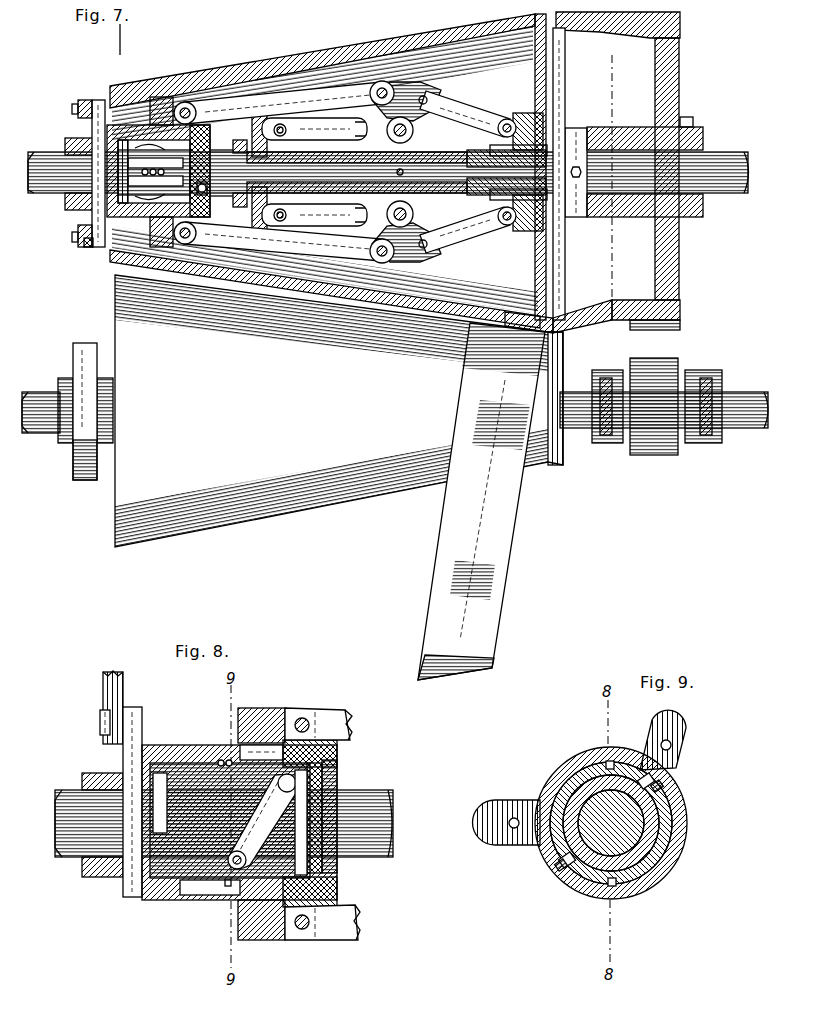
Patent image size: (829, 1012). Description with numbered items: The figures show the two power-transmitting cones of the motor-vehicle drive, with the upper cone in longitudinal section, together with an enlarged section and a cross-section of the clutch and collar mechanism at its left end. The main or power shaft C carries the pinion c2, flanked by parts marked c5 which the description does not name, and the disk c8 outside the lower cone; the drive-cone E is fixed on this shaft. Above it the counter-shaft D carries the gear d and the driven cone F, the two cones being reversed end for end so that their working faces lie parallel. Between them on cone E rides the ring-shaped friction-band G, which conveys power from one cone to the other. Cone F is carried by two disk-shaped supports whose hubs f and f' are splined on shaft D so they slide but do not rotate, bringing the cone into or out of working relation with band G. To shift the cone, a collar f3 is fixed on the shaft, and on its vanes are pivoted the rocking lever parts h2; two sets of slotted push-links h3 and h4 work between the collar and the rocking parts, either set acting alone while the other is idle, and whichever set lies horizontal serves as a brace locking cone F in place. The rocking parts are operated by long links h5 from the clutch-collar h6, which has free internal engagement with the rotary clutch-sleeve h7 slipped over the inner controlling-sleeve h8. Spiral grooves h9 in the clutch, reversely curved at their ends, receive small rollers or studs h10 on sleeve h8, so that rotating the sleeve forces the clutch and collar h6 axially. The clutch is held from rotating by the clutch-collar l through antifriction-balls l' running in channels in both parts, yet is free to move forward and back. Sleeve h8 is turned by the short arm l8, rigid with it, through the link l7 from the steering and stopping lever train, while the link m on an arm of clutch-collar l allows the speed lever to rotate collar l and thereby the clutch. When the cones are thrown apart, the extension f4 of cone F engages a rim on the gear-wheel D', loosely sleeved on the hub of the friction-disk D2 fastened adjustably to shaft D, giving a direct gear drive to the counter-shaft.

In FIG. 7, the driven cone F is at (328, 171).
In FIG. 7, the hub f is at (567, 164).
In FIG. 7, the hub f' is at (338, 162).
In FIG. 7, the collar f3 is at (498, 172).
In FIG. 7, the extension f4 is at (566, 329).
In FIG. 7, the drive-cone E is at (339, 411).
In FIG. 7, the friction-band G is at (445, 519).
In FIG. 7, the counter-shaft D is at (402, 172).
In FIG. 8, the counter-shaft D is at (233, 823).
In FIG. 9, the counter-shaft D is at (645, 828).
In FIG. 7, the gear-wheel D' is at (632, 172).
In FIG. 7, the friction-disk D2 is at (679, 245).
In FIG. 7, the gear d is at (681, 330).
In FIG. 7, the main shaft C is at (766, 409).
In FIG. 7, the pinion c2 is at (656, 455).
In FIG. 7, the pinion c5 is at (610, 443).
In FIG. 7, the disk c8 is at (80, 343).
In FIG. 7, the rocking lever parts h2 is at (391, 81).
In FIG. 7, the push-links h3 is at (326, 114).
In FIG. 7, the push-links h4 is at (494, 115).
In FIG. 7, the links h5 is at (287, 92).
In FIG. 8, the links h5 is at (347, 703).
In FIG. 7, the clutch-collar h6 is at (158, 97).
In FIG. 8, the clutch-collar h6 is at (270, 708).
In FIG. 7, the clutch-sleeve h7 is at (196, 125).
In FIG. 8, the clutch-sleeve h7 is at (337, 879).
In FIG. 9, the clutch-sleeve h7 is at (557, 768).
In FIG. 7, the controlling-sleeve h8 is at (82, 209).
In FIG. 8, the controlling-sleeve h8 is at (342, 783).
In FIG. 9, the controlling-sleeve h8 is at (672, 830).
In FIG. 7, the spiral grooves h9 is at (138, 125).
In FIG. 8, the spiral grooves h9 is at (337, 768).
In FIG. 9, the spiral grooves h9 is at (682, 807).
In FIG. 7, the rollers or studs h10 is at (206, 196).
In FIG. 8, the rollers or studs h10 is at (208, 898).
In FIG. 9, the rollers or studs h10 is at (668, 790).
In FIG. 7, the clutch-collar l is at (147, 203).
In FIG. 8, the clutch-collar l is at (233, 828).
In FIG. 9, the clutch-collar l is at (525, 786).
In FIG. 8, the antifriction-balls l' is at (214, 839).
In FIG. 9, the antifriction-balls l' is at (620, 822).
In FIG. 7, the link l7 is at (88, 100).
In FIG. 8, the link l7 is at (104, 697).
In FIG. 7, the short arm l8 is at (80, 120).
In FIG. 8, the short arm l8 is at (142, 713).
In FIG. 9, the short arm l8 is at (689, 747).
In FIG. 7, the link m is at (90, 248).